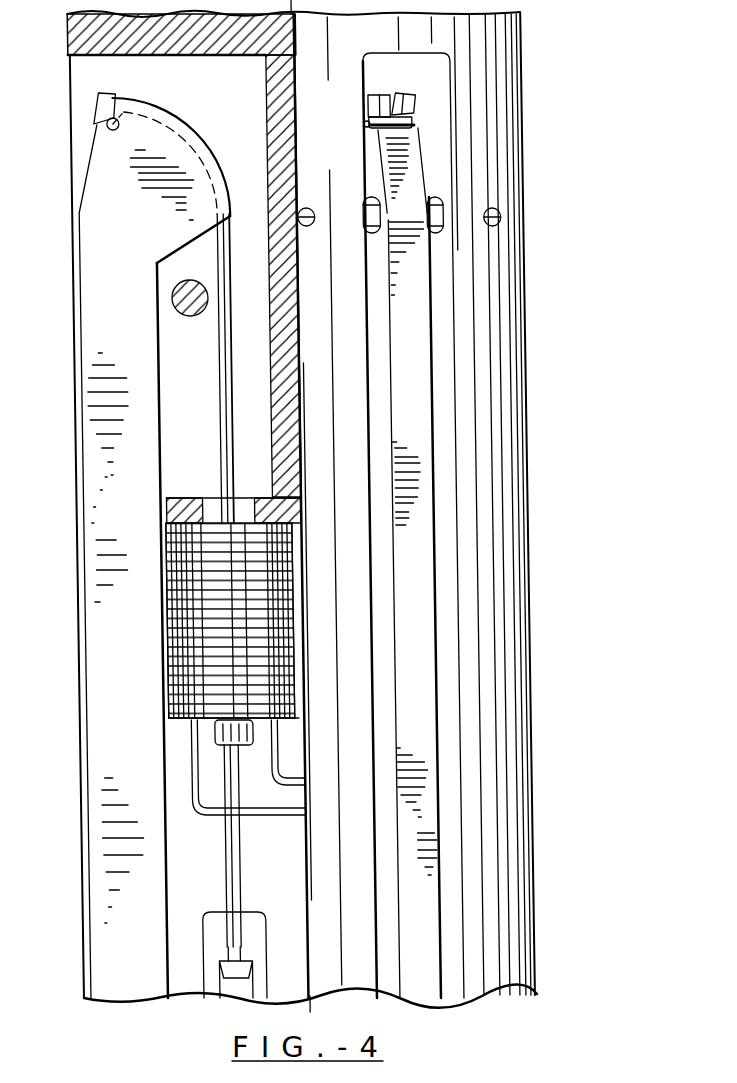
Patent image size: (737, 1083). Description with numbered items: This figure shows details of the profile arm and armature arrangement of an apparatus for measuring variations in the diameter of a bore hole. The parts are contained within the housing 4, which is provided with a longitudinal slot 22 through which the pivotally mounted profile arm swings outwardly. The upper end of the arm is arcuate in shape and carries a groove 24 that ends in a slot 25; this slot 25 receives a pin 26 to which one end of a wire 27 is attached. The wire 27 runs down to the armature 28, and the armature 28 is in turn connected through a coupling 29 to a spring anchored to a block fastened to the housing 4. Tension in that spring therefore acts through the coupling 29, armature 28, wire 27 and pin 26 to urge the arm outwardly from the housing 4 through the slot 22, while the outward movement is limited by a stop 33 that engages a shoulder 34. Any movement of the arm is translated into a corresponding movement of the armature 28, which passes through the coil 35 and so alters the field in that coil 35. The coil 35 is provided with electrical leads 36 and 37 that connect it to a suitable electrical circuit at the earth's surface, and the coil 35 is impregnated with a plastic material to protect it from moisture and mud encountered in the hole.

The housing 4 is at (512, 174).
The longitudinal slot 22 is at (423, 597).
The groove 24 is at (189, 137).
The slot 25 is at (97, 125).
The pin 26 is at (118, 97).
The wire 27 is at (222, 397).
The armature 28 is at (206, 732).
The coupling 29 is at (192, 952).
The stop 33 is at (171, 308).
The shoulder 34 is at (193, 239).
The coil 35 is at (161, 612).
The electrical lead 36 is at (292, 772).
The electrical lead 37 is at (206, 814).